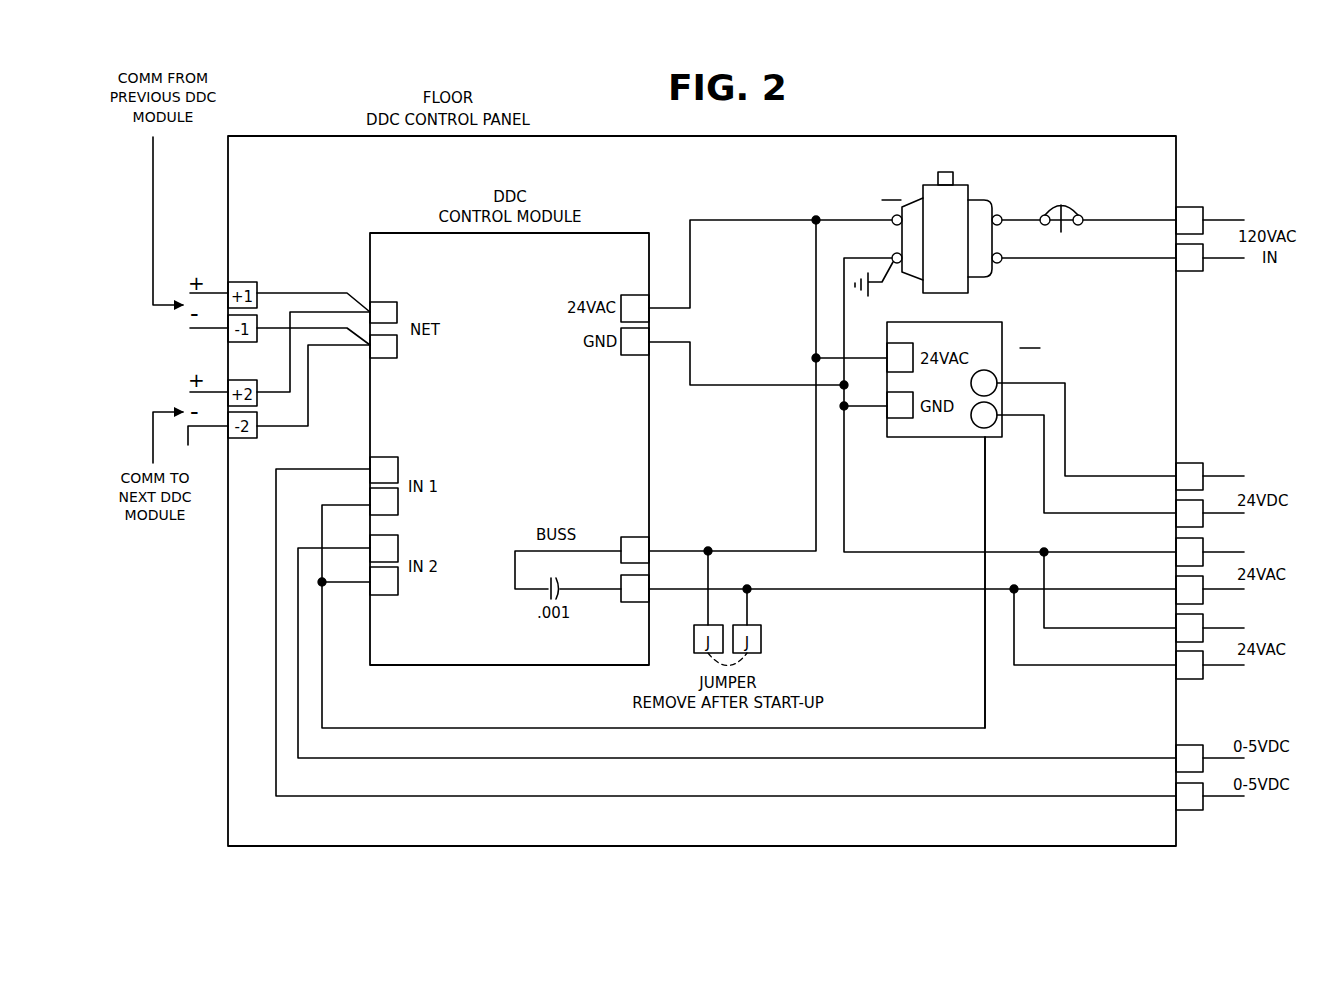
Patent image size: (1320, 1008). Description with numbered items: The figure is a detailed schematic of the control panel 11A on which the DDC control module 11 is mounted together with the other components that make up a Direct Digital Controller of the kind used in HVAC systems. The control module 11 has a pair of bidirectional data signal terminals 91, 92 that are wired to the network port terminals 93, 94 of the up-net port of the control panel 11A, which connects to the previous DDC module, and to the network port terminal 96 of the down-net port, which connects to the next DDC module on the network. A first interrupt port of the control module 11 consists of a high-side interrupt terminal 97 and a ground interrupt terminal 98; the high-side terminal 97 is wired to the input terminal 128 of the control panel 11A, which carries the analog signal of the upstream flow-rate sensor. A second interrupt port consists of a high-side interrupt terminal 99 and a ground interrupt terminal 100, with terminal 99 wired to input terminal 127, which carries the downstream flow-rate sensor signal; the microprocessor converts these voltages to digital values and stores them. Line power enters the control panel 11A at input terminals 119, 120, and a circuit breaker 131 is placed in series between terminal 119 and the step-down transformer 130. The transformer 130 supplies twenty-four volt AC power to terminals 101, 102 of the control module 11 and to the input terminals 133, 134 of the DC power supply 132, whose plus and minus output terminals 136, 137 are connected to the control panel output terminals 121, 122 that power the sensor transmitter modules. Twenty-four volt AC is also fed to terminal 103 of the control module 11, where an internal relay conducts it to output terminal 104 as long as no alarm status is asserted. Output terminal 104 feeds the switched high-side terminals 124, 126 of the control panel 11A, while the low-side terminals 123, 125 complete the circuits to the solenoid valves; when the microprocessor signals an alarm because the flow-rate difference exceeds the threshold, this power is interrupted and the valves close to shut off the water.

The control panel 11A is at (817, 136).
The control module 11 is at (615, 233).
The bidirectional data signal terminal 91 is at (395, 308).
The bidirectional data signal terminal 92 is at (395, 348).
The network port terminal 93 is at (313, 293).
The network port terminal 94 is at (313, 326).
The network port terminal 96 is at (313, 369).
The high-side interrupt terminal 97 is at (368, 462).
The ground interrupt terminal 98 is at (368, 496).
The high-side interrupt terminal 99 is at (368, 540).
The ground interrupt terminal 100 is at (368, 576).
The 24-volt AC terminal 101 is at (621, 296).
The 24-volt AC terminal 102 is at (621, 354).
The relay input terminal 103 is at (621, 538).
The output terminal 104 is at (621, 602).
The input terminal 119 is at (1192, 217).
The input terminal 120 is at (1192, 254).
The output terminal 121 is at (1192, 472).
The output terminal 122 is at (1192, 509).
The low-side 24-AC terminal 123 is at (1192, 548).
The switched 24-AC high-side terminal 124 is at (1192, 586).
The low-side 24-AC terminal 125 is at (1192, 624).
The switched 24-AC high-side terminal 126 is at (1192, 661).
The input terminal 127 is at (1192, 754).
The input terminal 128 is at (1192, 792).
The step-down transformer 130 is at (968, 185).
The circuit breaker 131 is at (1080, 216).
The 24-volt DC power supply 132 is at (990, 322).
The power supply 24VAC terminal 133 is at (856, 356).
The input terminal 134 is at (857, 409).
The plus 24-volt DC output terminal 136 is at (1005, 383).
The minus 24-volt DC output terminal 137 is at (1022, 418).